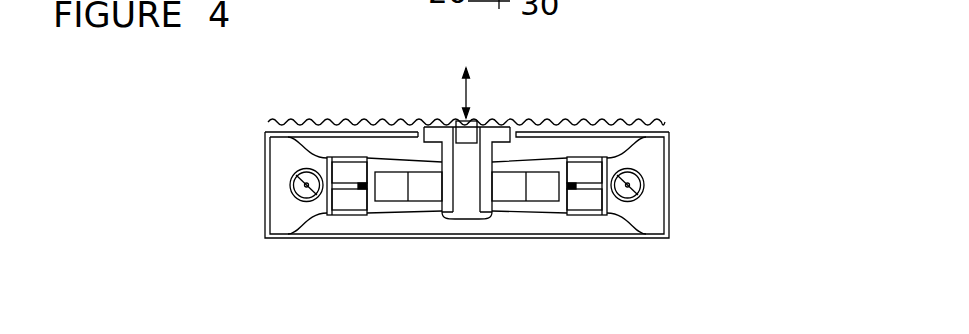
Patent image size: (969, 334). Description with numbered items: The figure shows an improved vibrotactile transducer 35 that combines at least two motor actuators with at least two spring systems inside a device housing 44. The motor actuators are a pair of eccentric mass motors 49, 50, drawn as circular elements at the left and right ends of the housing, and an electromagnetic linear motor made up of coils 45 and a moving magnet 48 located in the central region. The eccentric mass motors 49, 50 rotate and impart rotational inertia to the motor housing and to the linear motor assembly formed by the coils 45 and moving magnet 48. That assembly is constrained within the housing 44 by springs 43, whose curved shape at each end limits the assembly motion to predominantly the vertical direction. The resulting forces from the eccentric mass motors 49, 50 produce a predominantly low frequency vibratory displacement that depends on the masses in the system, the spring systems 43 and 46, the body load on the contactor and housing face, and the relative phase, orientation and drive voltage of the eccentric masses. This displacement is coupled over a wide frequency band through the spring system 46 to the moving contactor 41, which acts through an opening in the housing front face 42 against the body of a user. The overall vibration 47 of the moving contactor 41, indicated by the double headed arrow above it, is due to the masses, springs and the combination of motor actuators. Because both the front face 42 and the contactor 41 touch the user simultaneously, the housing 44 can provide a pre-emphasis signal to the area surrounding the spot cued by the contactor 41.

The vibrotactile transducer 35 is at (410, 185).
The moving contactor 41 is at (508, 127).
The housing front face 42 is at (382, 133).
The springs 43 is at (292, 145).
The device housing 44 is at (670, 188).
The coils 45 is at (348, 203).
The spring system 46 is at (408, 215).
The overall vibration 47 is at (476, 90).
The moving magnet 48 is at (538, 198).
The eccentric mass motor 49 is at (640, 198).
The eccentric mass motor 50 is at (295, 205).